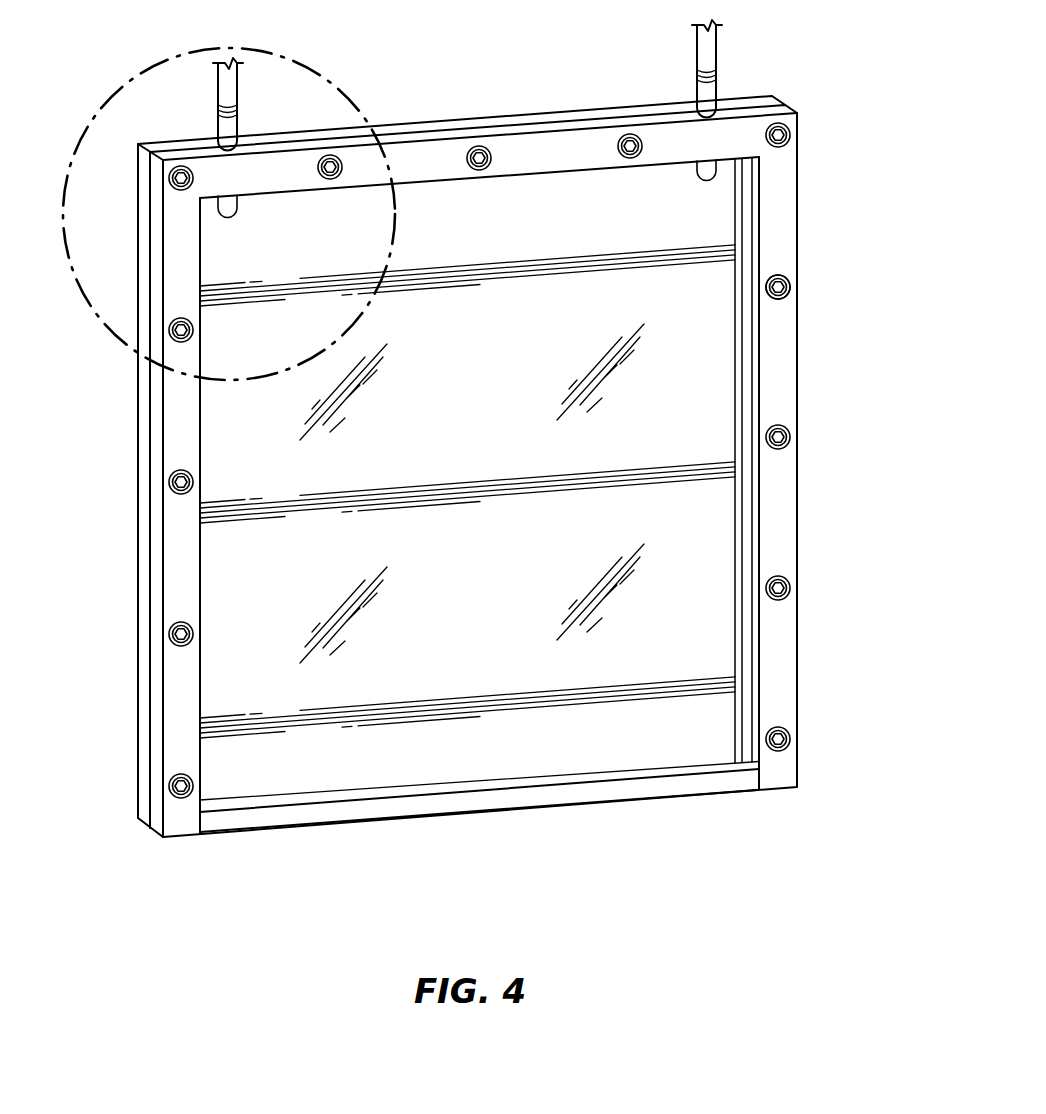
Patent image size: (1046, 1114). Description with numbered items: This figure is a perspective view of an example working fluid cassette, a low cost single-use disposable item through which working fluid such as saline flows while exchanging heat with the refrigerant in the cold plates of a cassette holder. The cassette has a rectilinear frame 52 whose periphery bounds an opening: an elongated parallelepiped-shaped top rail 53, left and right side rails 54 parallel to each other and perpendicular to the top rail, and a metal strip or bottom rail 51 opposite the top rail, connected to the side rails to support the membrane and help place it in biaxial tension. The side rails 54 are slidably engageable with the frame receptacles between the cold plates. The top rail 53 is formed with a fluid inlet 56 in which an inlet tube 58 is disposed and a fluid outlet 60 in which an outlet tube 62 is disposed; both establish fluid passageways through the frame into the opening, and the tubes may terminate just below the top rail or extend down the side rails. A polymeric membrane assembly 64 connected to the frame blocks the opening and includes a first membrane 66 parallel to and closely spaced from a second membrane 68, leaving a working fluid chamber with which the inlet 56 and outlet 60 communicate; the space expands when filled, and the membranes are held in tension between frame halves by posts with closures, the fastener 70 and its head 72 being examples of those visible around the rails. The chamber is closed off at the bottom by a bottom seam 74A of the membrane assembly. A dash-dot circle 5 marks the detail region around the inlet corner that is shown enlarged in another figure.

The detail circle of FIG. 5 is at (121, 74).
The bottom rail 51 is at (345, 818).
The frame 52 is at (540, 172).
The top rail 53 is at (422, 113).
The side rails 54 is at (175, 410).
The fluid inlet 56 is at (218, 138).
The inlet tube 58 is at (237, 128).
The fluid outlet 60 is at (697, 100).
The outlet tube 62 is at (716, 92).
The membrane assembly 64 is at (514, 824).
The first membrane 66 is at (698, 530).
The second membrane 68 is at (707, 513).
The bolt 70 is at (777, 278).
The bolt head 72 is at (790, 292).
The bottom seam 74A is at (610, 789).